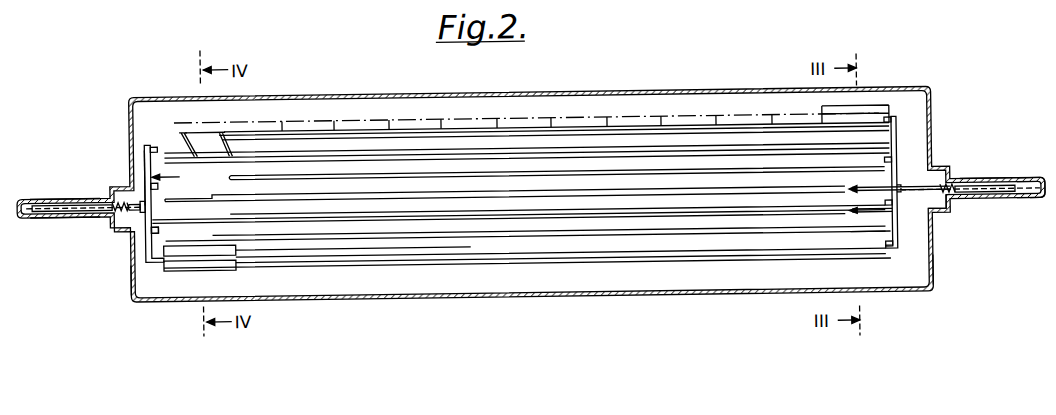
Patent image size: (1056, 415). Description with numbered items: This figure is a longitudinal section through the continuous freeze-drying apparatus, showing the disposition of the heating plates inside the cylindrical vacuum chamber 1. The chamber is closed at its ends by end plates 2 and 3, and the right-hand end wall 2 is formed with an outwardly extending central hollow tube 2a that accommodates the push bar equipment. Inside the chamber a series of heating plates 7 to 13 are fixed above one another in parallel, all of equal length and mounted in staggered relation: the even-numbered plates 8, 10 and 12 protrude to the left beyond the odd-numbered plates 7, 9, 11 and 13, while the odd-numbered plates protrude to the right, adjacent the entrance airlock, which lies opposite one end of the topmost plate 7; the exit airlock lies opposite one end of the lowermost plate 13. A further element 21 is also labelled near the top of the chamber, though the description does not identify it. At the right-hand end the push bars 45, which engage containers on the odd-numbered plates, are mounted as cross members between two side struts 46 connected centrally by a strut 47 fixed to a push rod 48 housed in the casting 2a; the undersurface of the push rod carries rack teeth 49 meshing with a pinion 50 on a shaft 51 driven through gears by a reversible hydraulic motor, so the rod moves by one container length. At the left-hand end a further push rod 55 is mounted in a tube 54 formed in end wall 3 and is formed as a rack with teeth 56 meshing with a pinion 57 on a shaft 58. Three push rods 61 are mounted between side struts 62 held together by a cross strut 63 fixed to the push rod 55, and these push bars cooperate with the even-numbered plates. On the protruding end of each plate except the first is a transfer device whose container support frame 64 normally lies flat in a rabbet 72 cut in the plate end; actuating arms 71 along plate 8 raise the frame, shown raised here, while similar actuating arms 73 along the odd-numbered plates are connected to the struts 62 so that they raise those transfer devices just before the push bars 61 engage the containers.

The vacuum chamber 1 is at (602, 96).
The end plate 2 is at (933, 280).
The hollow tube 2a is at (1036, 185).
The end plate 3 is at (128, 285).
The heating plate 7 is at (508, 135).
The heating plate 8 is at (470, 149).
The heating plate 9 is at (533, 165).
The heating plate 10 is at (505, 190).
The heating plate 11 is at (490, 215).
The heating plate 12 is at (530, 240).
The heating plate 13 is at (560, 260).
The top strip 21 is at (427, 109).
The push bars 45 is at (890, 124).
The side struts 46 is at (900, 155).
The strut 47 is at (900, 192).
The push rod 48 is at (996, 185).
The rack teeth 49 is at (976, 199).
The pinion 50 is at (944, 208).
The shaft 51 is at (946, 195).
The tube 54 is at (48, 191).
The push rod 55 is at (88, 191).
The teeth 56 is at (84, 206).
The pinion 57 is at (124, 213).
The shaft 58 is at (140, 196).
The push rods 61 is at (153, 142).
The side struts 62 is at (143, 160).
The cross strut 63 is at (152, 213).
The container support frame 64 is at (224, 140).
The actuating arms 71 is at (870, 241).
The rabbet 72 is at (170, 150).
The actuating arms 73 is at (178, 210).